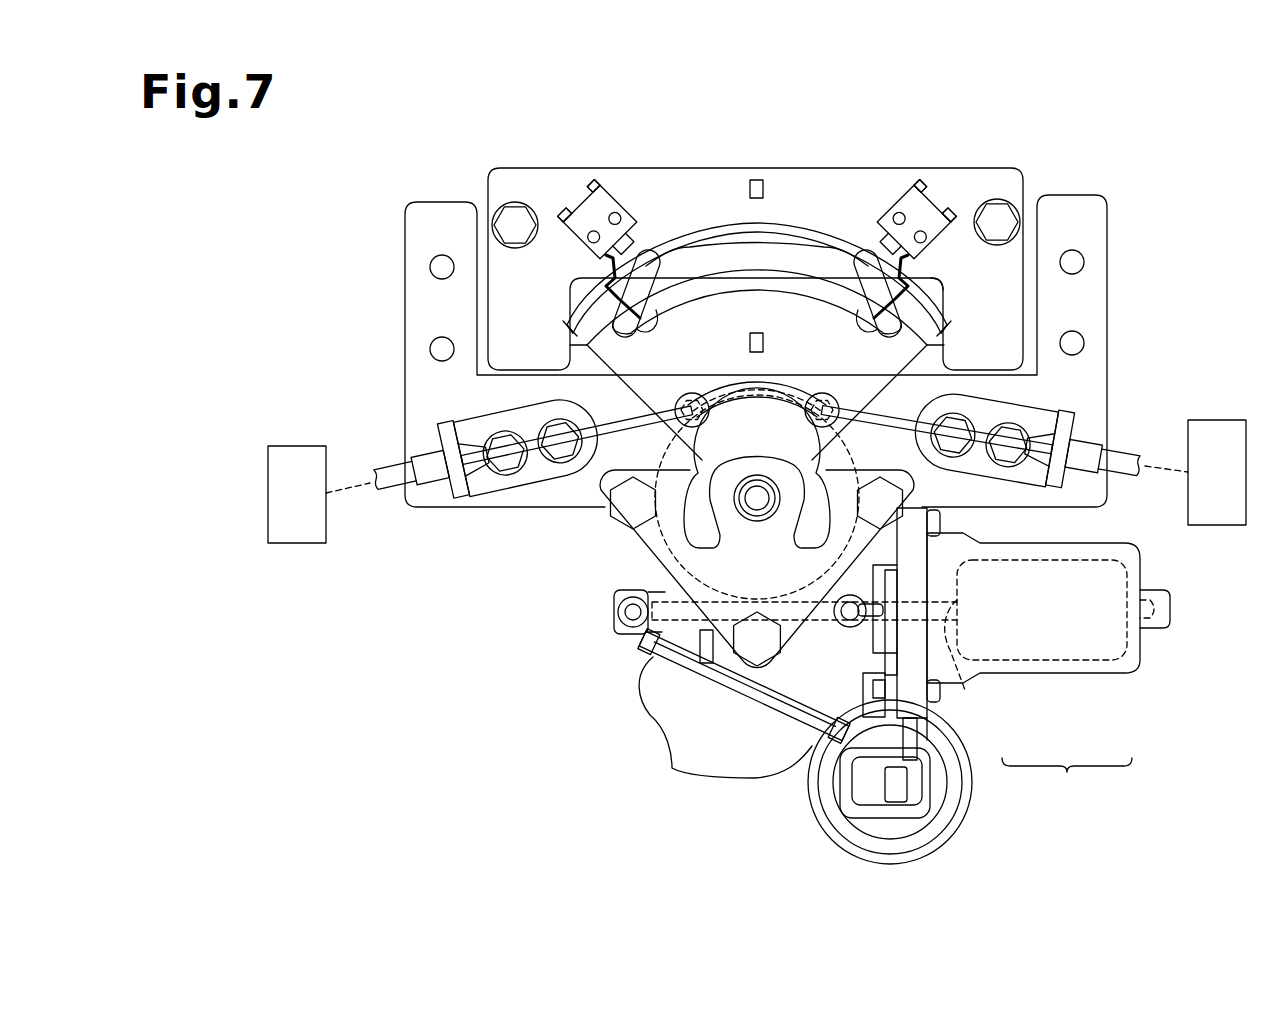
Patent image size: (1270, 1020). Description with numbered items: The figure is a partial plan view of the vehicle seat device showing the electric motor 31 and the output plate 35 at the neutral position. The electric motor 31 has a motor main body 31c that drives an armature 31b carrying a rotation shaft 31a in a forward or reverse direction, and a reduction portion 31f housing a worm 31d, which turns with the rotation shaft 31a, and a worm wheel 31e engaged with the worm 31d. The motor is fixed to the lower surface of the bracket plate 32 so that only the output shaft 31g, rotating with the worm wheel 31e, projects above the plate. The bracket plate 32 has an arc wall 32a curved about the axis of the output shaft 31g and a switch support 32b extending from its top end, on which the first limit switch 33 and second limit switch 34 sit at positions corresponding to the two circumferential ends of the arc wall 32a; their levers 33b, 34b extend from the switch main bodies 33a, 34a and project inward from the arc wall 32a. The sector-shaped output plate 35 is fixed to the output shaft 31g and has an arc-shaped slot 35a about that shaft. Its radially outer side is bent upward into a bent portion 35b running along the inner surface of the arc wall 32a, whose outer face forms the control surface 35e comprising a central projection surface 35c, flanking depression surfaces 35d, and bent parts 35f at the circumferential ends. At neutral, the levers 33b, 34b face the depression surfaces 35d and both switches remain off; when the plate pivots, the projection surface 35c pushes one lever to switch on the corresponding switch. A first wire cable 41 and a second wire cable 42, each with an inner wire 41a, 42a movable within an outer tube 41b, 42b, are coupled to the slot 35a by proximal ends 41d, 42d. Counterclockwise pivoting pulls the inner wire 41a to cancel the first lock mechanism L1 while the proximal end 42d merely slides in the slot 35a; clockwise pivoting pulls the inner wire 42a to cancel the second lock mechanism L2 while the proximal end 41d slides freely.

The electric motor 31 is at (1067, 779).
The rotation shaft 31a is at (973, 682).
The armature 31b is at (1105, 675).
The motor main body 31c is at (1072, 676).
The worm 31d is at (717, 624).
The worm wheel 31e is at (646, 563).
The reduction portion 31f is at (975, 725).
The output shaft 31g is at (757, 512).
The bracket plate 32 is at (1108, 383).
The arc wall 32a is at (937, 296).
The switch support 32b is at (879, 168).
The first limit switch 33 is at (587, 211).
The switch main body 33a is at (618, 200).
The lever 33b is at (630, 334).
The second limit switch 34 is at (922, 208).
The switch main body 34a is at (890, 203).
The lever 34b is at (884, 334).
The output plate 35 is at (778, 324).
The slot 35a is at (735, 390).
The bent portion 35b is at (725, 232).
The projection surface 35c is at (797, 228).
The depression surface 35d is at (665, 300).
The control surface 35e is at (817, 246).
The bent part 35f is at (563, 327).
The first wire cable 41 is at (1030, 428).
The inner wire 41a is at (875, 428).
The outer tube 41b is at (1130, 471).
The proximal end 41d is at (828, 397).
The second wire cable 42 is at (488, 436).
The inner wire 42a is at (643, 428).
The outer tube 42b is at (385, 489).
The proximal end 42d is at (684, 398).
The first lock mechanism L1 is at (1216, 420).
The second lock mechanism L2 is at (298, 446).